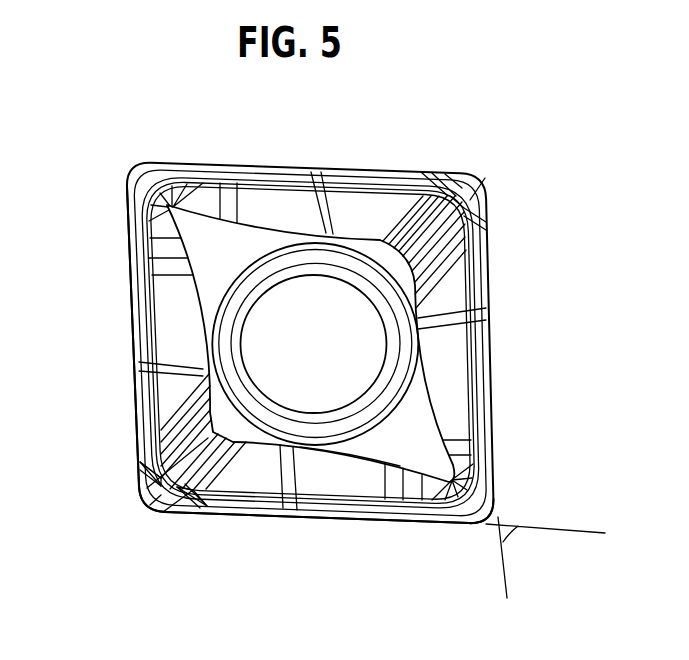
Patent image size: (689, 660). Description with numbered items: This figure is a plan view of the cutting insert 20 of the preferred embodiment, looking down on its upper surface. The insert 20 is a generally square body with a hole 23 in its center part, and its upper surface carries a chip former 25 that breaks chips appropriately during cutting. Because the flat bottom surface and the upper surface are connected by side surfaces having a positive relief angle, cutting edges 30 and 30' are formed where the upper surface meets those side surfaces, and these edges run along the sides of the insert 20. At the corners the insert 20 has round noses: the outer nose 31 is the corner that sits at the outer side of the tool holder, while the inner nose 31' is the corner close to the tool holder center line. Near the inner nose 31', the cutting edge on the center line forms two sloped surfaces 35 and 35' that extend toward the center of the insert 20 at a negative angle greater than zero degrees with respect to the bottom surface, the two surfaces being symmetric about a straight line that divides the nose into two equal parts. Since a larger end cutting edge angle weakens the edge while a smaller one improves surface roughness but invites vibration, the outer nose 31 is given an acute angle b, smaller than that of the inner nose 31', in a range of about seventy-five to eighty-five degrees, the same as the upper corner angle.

The cutting insert 20 is at (118, 168).
The central clamping hole 23 is at (333, 346).
The chip former 25 is at (347, 472).
The cutting edge 30 is at (317, 576).
The cutting edge 30' is at (96, 336).
The outer nose 31 is at (476, 553).
The inner nose 31' is at (116, 518).
The sloped surface 35 is at (189, 536).
The sloped surface 35' is at (109, 484).
The nose angle b is at (545, 557).